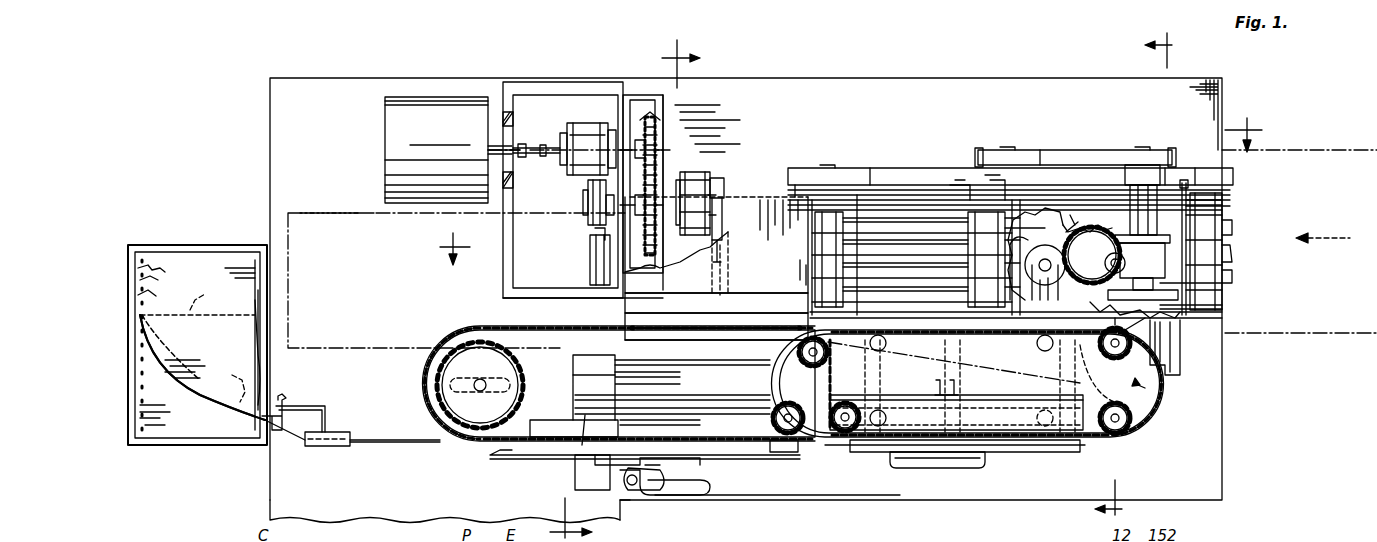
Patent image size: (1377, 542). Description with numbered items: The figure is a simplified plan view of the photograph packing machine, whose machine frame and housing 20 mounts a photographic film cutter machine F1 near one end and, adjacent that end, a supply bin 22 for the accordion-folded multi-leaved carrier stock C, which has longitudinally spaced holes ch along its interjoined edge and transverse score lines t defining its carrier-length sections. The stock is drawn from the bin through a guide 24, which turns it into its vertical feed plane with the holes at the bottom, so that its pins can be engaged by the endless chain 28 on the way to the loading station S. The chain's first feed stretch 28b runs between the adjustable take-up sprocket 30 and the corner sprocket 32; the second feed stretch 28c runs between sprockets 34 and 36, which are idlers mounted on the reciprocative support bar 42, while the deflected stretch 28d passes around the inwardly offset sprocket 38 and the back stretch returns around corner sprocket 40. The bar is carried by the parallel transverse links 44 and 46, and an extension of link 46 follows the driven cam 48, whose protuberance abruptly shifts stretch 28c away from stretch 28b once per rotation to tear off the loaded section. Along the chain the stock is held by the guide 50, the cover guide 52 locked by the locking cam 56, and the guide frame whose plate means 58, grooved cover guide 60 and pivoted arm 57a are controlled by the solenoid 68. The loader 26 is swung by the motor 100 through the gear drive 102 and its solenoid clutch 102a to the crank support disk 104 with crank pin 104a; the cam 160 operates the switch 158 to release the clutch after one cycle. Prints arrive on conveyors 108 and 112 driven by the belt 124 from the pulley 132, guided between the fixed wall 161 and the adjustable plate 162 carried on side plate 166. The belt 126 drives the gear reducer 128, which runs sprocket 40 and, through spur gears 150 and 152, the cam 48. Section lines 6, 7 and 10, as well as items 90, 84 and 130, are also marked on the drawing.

The machine frame and housing 20 is at (1222, 454).
The supply bin 22 is at (183, 247).
The holes ch is at (167, 279).
The score lines t is at (197, 342).
The carrier stock C is at (208, 408).
The guide 24 is at (332, 447).
The photographic film cutter machine F1 is at (356, 213).
The motor 100 is at (430, 103).
The gear drive 102 is at (548, 105).
The solenoid clutch 102a is at (590, 133).
The cam 160 is at (588, 195).
The switch 158 is at (590, 256).
The crank support disk 104 is at (690, 172).
The crank pin 104a is at (725, 180).
The loader 26 is at (716, 268).
The conveyor 112 is at (820, 258).
The pulley 132 is at (806, 168).
The belt 124 is at (897, 190).
The solenoid 68 is at (938, 185).
The belt 126 is at (1072, 155).
The driven cam 48 is at (1050, 228).
The spur gear 152 is at (1061, 268).
The conveyor 108 is at (1230, 270).
The side plate 166 is at (1197, 183).
The plate 162 is at (1228, 203).
The shaft 130 is at (1222, 284).
The fixed wall 161 is at (1222, 306).
The endless chain 28 is at (488, 326).
The adjustable take-up sprocket 30 is at (522, 390).
The carriage block 90 is at (583, 372).
The guide 50 is at (562, 424).
The cover guide 52 is at (513, 455).
The link 84 is at (583, 414).
The locking cam 56 is at (620, 483).
The corner sprocket 32 is at (790, 405).
The chain feed stretch 28b is at (782, 455).
The deflected chain stretch 28d is at (819, 440).
The loading station S is at (748, 465).
The chain feed stretch 28c is at (868, 442).
The sprocket 38 is at (828, 365).
The sprocket 34 is at (850, 402).
The transverse link 44 is at (890, 375).
The transverse link 46 is at (1033, 362).
The plate means 58 is at (996, 402).
The grooved cover guide 60 is at (1040, 445).
The pivoted arm 57a is at (940, 460).
The corner sprocket 40 is at (1130, 345).
The gear reducer 128 is at (1180, 368).
The spur gear 150 is at (1140, 384).
The support bar 42 is at (1108, 405).
The sprocket 36 is at (1130, 408).
The section line 6- 6 is at (1140, 280).
The section line 7- 7 is at (844, 186).
The section line 10- 10 is at (628, 289).